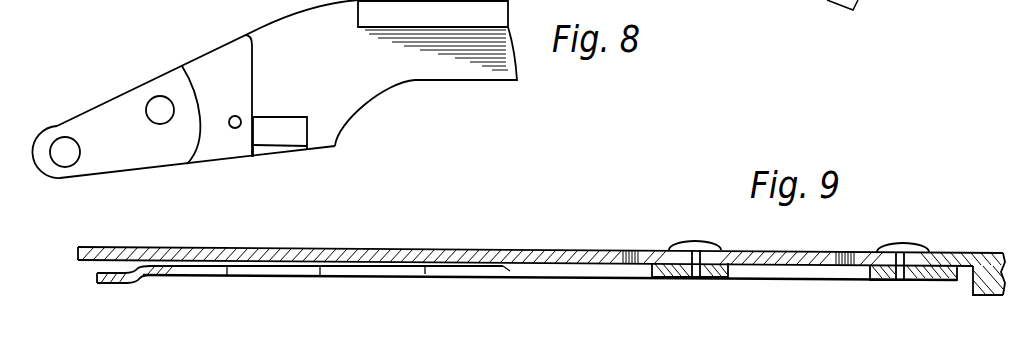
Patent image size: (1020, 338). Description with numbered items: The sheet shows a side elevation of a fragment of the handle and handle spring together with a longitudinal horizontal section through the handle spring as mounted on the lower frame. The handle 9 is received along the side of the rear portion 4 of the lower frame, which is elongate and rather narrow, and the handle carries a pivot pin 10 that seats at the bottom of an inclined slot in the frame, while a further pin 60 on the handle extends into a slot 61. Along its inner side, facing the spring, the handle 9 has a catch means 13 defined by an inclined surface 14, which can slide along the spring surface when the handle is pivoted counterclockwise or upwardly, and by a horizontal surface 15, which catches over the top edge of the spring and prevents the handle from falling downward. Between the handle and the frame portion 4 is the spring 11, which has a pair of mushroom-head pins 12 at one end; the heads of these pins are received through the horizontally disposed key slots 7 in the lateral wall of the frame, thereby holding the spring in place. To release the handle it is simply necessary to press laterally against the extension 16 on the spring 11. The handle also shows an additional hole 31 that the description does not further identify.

In FIG. 8, the handle 9 is at (460, 65).
In FIG. 8, the pivot hole 31 is at (60, 143).
In FIG. 8, the pivot pin 10 is at (157, 105).
In FIG. 8, the pin 60 is at (235, 128).
In FIG. 8, the horizontal surface 15 is at (284, 115).
In FIG. 8, the inclined surface 14 is at (275, 150).
In FIG. 8, the catch means 13 is at (292, 130).
In FIG. 9, the rear portion of the lower frame 4 is at (392, 257).
In FIG. 9, the spring 11 is at (557, 268).
In FIG. 9, the extension 16 is at (372, 272).
In FIG. 9, the slot 61 is at (122, 284).
In FIG. 9, the key slots 7 is at (638, 250).
In FIG. 9, the mushroom-head pins 12 is at (696, 242).